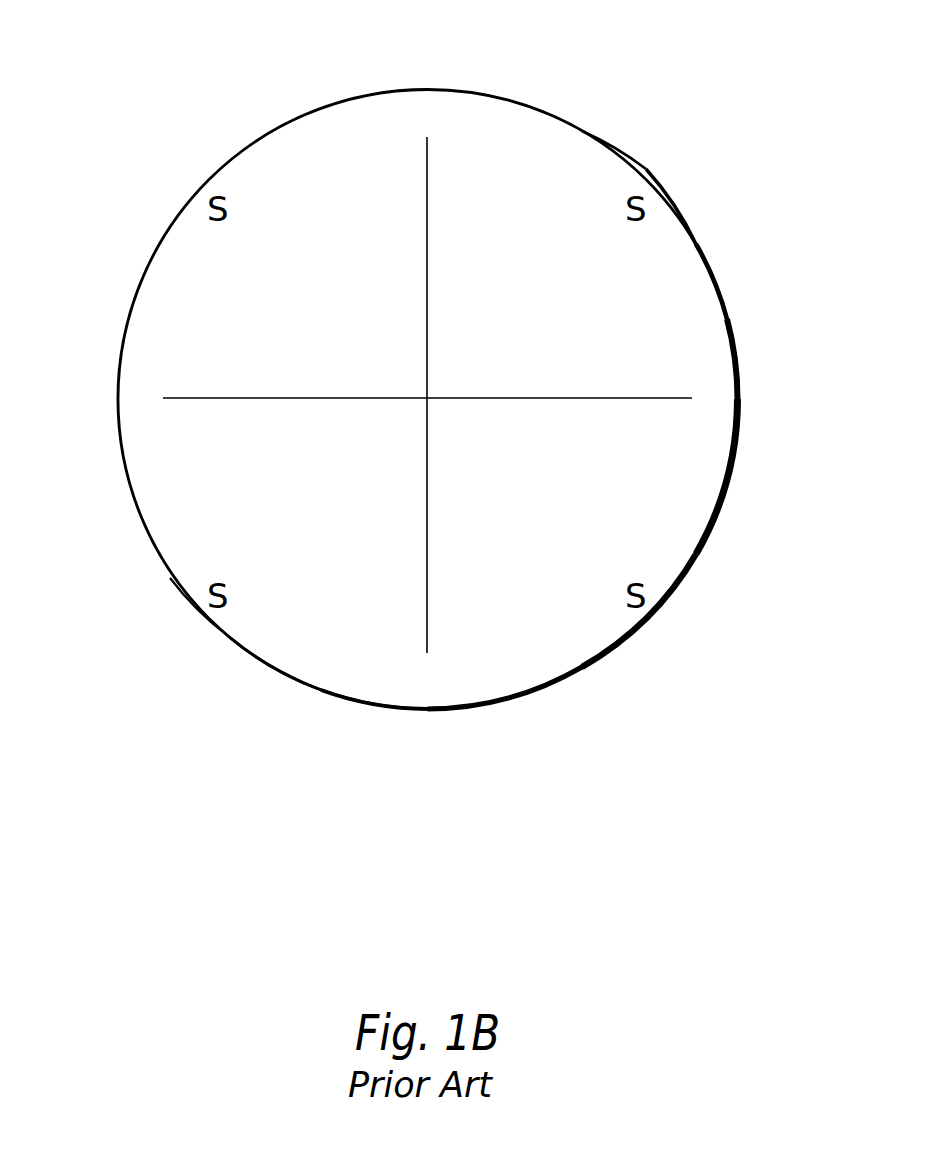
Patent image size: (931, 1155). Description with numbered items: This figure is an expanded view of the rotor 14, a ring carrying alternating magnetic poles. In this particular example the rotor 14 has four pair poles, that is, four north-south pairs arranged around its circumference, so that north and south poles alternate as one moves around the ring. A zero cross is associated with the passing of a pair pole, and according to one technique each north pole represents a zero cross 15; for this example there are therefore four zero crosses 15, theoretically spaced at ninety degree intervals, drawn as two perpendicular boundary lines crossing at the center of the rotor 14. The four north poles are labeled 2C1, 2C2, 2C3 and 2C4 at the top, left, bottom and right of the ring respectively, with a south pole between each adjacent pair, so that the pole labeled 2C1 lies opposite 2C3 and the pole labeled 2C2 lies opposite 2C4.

The rotor 14 is at (443, 881).
The zero cross 15 is at (427, 147).
The first north pole 2C1 is at (427, 111).
The second north pole 2C2 is at (121, 399).
The third north pole 2C3 is at (427, 688).
The fourth north pole 2C4 is at (737, 399).